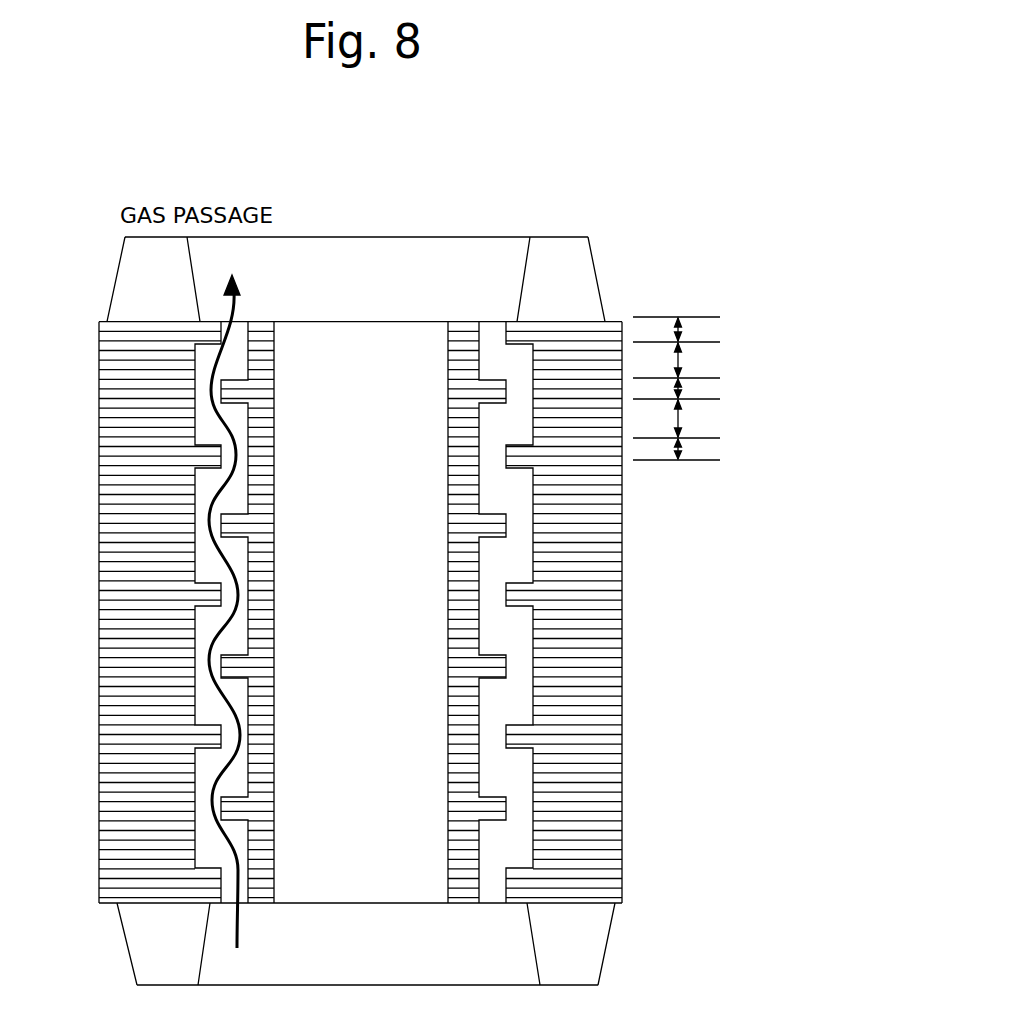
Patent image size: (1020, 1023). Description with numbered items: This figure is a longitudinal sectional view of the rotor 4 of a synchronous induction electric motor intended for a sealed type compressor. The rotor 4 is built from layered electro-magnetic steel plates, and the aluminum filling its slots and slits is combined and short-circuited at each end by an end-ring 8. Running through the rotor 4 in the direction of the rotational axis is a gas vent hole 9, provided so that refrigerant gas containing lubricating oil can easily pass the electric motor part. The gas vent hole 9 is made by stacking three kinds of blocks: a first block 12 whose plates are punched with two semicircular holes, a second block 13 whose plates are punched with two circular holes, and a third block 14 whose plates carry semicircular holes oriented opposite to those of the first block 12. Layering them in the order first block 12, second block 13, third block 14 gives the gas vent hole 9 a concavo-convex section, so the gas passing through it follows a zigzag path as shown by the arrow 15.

The rotor 4 is at (96, 737).
The end-ring 8 is at (582, 268).
The gas vent hole 9 is at (212, 493).
The first block 12 is at (683, 327).
The second block 13 is at (682, 363).
The third block 14 is at (682, 390).
The arrow 15 is at (240, 285).